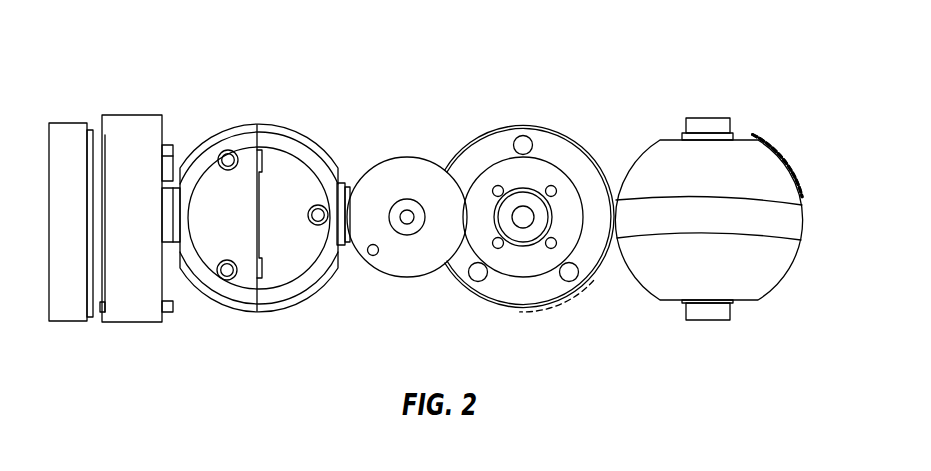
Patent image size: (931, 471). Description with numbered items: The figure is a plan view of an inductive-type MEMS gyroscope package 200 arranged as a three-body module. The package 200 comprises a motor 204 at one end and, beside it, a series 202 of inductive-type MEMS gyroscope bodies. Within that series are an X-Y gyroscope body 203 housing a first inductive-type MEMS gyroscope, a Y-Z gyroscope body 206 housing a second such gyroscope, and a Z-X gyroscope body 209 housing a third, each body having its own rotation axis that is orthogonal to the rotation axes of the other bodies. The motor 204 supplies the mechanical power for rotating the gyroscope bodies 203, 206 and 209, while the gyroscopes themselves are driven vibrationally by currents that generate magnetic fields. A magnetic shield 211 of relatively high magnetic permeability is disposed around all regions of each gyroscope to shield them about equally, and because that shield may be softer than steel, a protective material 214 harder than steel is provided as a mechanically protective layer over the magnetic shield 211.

The inductive-type MEMS gyroscope package 200 is at (212, 72).
The series of inductive-type MEMS gyroscope bodies 202 is at (777, 94).
The motor 204 is at (48, 96).
The X-Y gyroscope body 203 is at (326, 152).
The Y-Z gyroscope body 206 is at (458, 152).
The Z-X gyroscope body 209 is at (637, 157).
The magnetic shield 211 is at (557, 307).
The protective material 214 is at (798, 187).